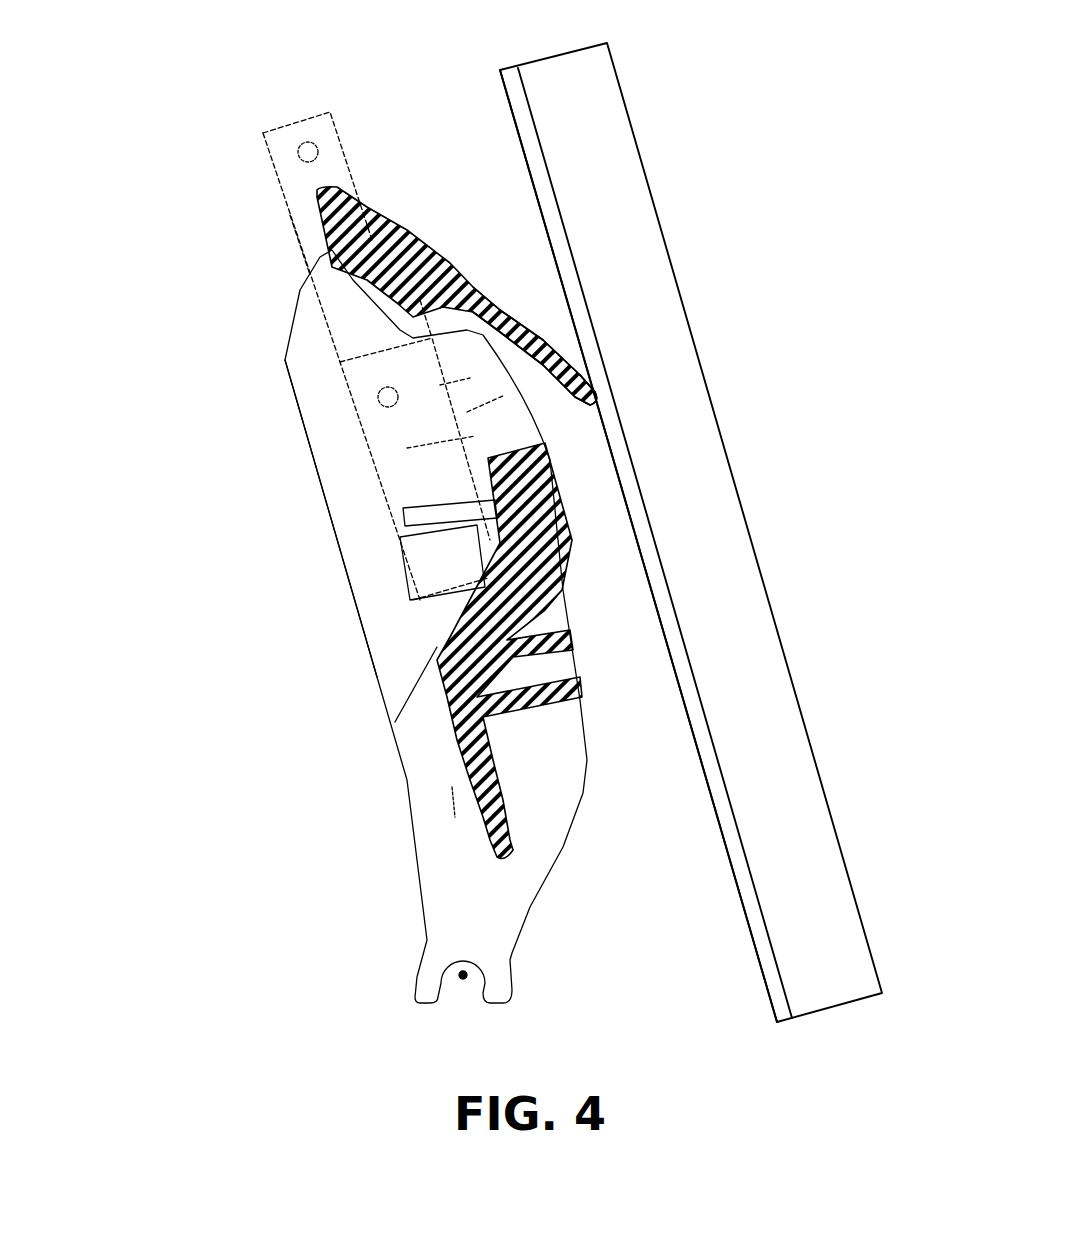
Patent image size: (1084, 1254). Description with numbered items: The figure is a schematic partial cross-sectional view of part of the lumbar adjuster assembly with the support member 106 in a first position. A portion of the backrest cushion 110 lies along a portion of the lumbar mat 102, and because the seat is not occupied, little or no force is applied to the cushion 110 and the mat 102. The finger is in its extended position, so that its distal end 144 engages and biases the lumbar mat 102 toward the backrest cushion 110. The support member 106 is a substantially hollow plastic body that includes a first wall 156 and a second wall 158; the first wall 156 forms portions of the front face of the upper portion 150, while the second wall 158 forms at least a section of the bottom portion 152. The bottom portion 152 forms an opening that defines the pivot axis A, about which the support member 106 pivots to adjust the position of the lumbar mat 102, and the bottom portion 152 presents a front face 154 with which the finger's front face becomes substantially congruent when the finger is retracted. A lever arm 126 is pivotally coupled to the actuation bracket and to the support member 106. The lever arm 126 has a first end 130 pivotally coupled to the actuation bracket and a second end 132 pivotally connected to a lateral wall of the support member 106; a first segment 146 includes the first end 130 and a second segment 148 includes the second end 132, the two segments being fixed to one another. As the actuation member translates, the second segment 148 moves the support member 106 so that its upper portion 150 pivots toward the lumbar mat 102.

The lumbar mat 102 is at (668, 598).
The support member 106 is at (360, 635).
The backrest cushion 110 is at (653, 232).
The lever arm 126 is at (333, 315).
The first end 130 is at (272, 155).
The second end 132 is at (413, 613).
The distal end 144 is at (505, 405).
The first segment 146 is at (303, 217).
The second segment 148 is at (370, 423).
The upper portion 150 is at (383, 210).
The bottom portion 152 is at (587, 797).
The front face 154 is at (555, 455).
The first wall 156 is at (407, 230).
The second wall 158 is at (505, 518).
The pivot axis A is at (463, 975).